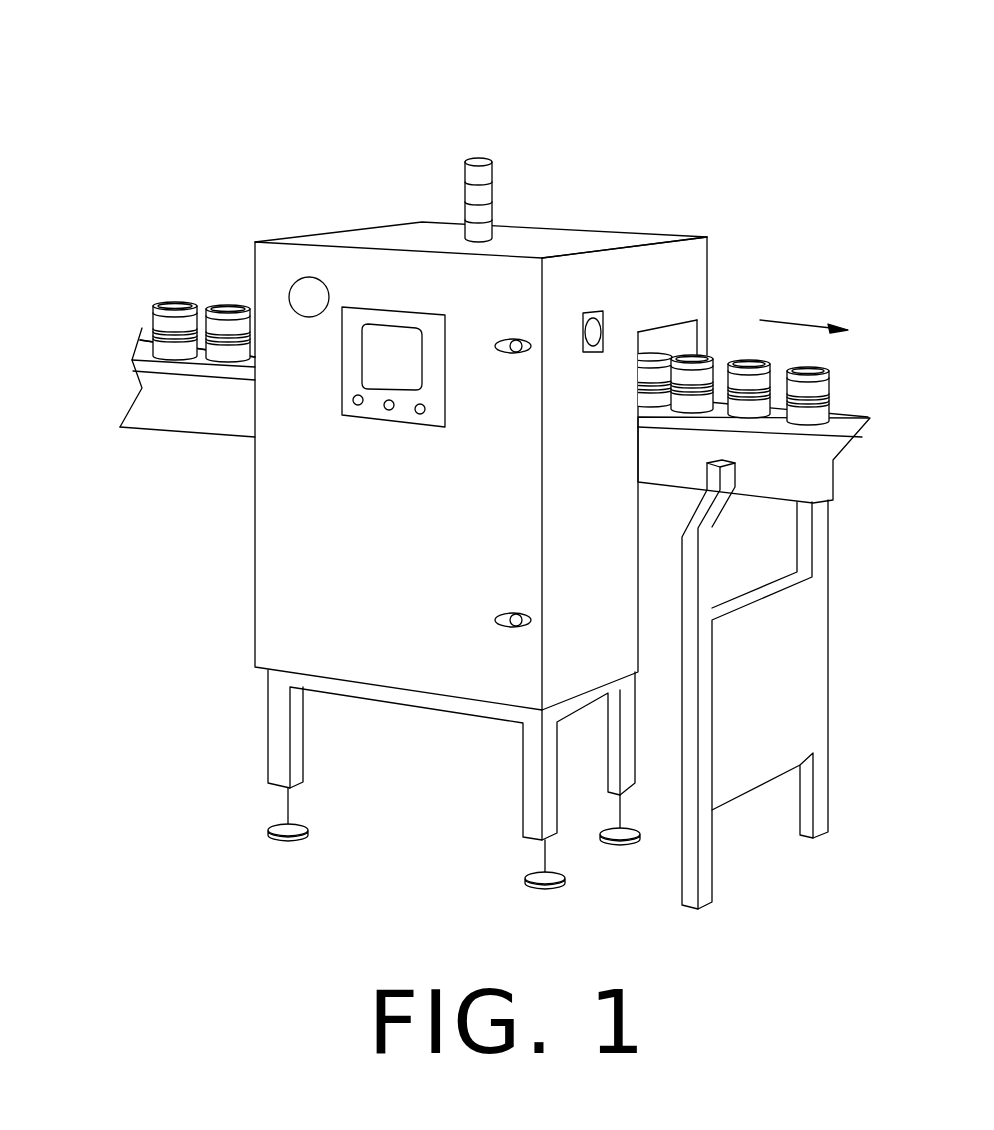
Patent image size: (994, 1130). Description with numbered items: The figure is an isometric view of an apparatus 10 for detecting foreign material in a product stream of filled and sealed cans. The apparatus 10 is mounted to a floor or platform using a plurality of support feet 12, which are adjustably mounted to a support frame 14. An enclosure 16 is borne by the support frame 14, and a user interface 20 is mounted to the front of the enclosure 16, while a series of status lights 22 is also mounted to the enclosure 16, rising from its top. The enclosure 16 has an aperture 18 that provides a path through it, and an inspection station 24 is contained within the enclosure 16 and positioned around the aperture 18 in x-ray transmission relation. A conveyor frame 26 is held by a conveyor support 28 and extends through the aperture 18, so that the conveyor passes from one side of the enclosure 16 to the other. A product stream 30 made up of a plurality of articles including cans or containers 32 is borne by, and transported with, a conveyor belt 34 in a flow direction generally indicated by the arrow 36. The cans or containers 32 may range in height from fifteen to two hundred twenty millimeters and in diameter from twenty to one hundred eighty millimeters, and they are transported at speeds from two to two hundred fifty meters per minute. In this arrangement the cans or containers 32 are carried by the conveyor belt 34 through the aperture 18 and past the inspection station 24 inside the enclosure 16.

The apparatus 10 is at (490, 31).
The support feet 12 is at (277, 808).
The support frame 14 is at (273, 727).
The enclosure 16 is at (403, 237).
The aperture 18 is at (668, 338).
The user interface 20 is at (372, 373).
The status lights 22 is at (497, 172).
The inspection station 24 is at (663, 285).
The conveyor frame 26 is at (168, 402).
The conveyor support 28 is at (760, 690).
The product stream 30 is at (163, 283).
The cans or containers 32 is at (227, 308).
The conveyor belt 34 is at (143, 352).
The flow direction 36 is at (793, 318).